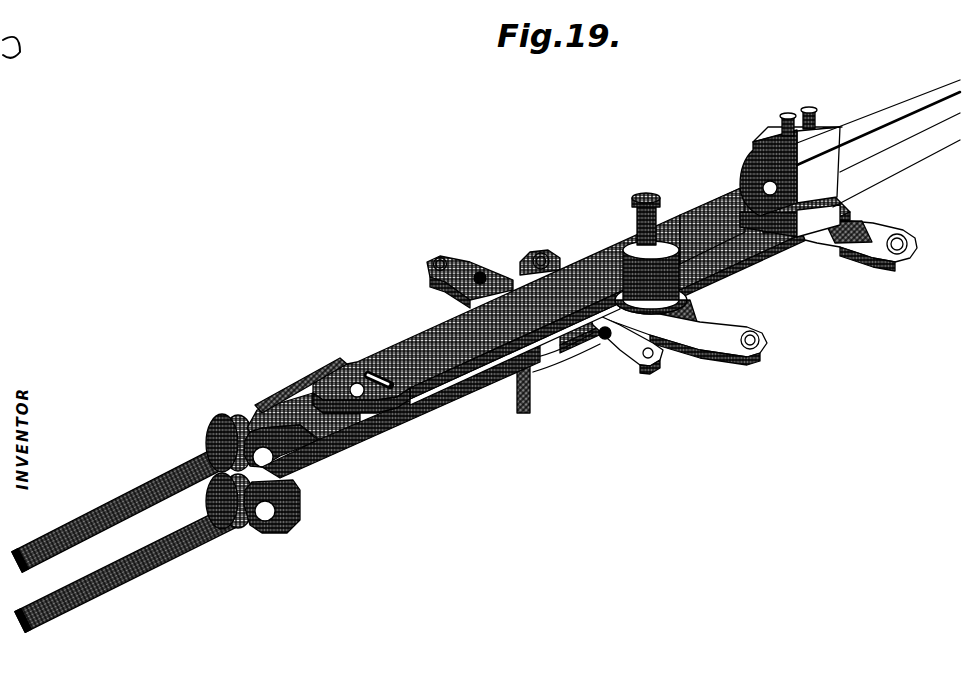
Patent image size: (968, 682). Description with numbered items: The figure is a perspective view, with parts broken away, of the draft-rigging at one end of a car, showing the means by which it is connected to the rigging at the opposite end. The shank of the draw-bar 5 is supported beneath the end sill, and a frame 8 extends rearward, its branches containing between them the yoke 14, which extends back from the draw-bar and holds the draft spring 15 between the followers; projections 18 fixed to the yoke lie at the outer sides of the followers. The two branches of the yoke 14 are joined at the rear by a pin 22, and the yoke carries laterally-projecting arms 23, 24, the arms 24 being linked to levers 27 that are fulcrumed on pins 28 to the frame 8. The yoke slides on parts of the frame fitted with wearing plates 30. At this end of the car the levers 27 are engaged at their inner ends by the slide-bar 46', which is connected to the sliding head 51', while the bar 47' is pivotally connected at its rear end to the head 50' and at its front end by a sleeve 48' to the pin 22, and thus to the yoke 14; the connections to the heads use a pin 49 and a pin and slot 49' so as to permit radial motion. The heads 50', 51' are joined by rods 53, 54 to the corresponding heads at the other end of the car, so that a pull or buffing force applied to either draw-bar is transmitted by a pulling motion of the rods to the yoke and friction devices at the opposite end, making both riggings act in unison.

The shank of a draw-bar 5 is at (873, 160).
The frame 8 is at (547, 388).
The yoke 14 is at (730, 263).
The draft spring 15 is at (683, 300).
The projections 18 is at (765, 222).
The pin 22 is at (632, 206).
The laterally-projecting arm 23 is at (885, 247).
The laterally-projecting arm 24 is at (733, 327).
The lever 27 is at (641, 362).
The pin 28 is at (605, 340).
The wearing plate 30 is at (842, 233).
The slide-bar 46' is at (515, 369).
The bar 47' is at (496, 314).
The sleeve 48' is at (708, 225).
The pin 49 is at (325, 367).
The pin and slot 49' is at (365, 356).
The sliding head 50' is at (291, 385).
The sliding head 51' is at (401, 421).
The rod 53 is at (142, 494).
The rod 54 is at (192, 536).